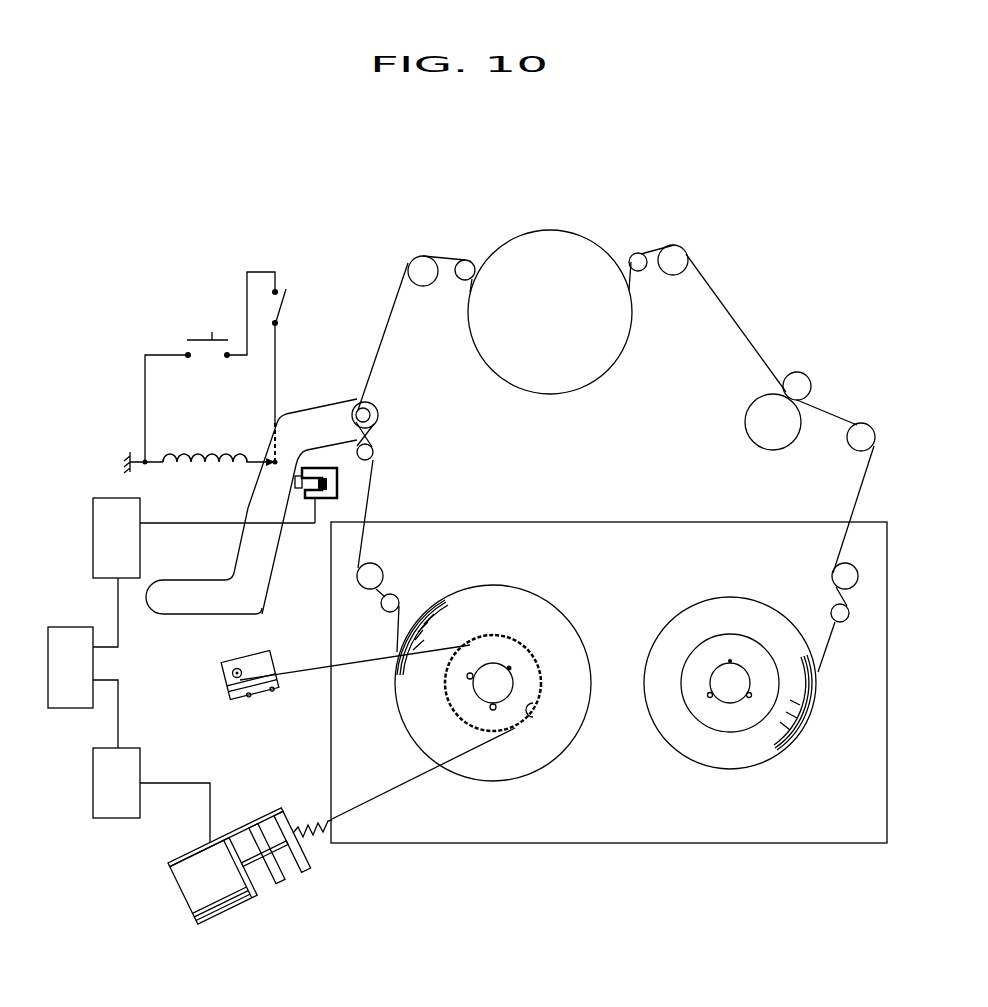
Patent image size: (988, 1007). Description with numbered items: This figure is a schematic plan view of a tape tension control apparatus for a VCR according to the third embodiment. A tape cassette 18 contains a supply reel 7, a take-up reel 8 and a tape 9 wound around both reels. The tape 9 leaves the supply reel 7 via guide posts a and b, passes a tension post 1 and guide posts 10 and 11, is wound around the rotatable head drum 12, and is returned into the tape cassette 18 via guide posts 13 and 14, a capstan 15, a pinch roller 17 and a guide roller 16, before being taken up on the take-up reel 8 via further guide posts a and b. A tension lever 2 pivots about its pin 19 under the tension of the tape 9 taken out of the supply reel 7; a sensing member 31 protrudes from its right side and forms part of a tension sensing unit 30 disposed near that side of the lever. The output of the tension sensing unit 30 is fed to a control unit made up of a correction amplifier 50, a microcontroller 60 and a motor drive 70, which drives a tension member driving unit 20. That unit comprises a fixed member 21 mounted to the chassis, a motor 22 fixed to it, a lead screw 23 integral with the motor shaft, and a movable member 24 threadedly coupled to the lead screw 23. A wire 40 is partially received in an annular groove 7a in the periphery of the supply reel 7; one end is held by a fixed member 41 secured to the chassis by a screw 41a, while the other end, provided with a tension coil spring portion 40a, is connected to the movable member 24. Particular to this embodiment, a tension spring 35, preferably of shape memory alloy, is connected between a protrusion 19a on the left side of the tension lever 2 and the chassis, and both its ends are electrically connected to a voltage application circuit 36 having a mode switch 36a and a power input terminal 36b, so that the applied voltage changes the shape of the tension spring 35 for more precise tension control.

The tension post 1 is at (380, 413).
The tension lever 2 is at (313, 416).
The supply reel 7 is at (493, 701).
The annular groove 7a is at (522, 712).
The take-up reel 8 is at (733, 696).
The tape 9 is at (382, 343).
The guide post 10 is at (424, 256).
The guide post 11 is at (466, 260).
The head drum 12 is at (593, 240).
The guide post 13 is at (634, 252).
The guide post 14 is at (682, 250).
The capstan 15 is at (796, 380).
The guide roller 16 is at (859, 430).
The pinch roller 17 is at (752, 422).
The tape cassette 18 is at (816, 845).
The pin 19 is at (247, 594).
The protrusion 19a is at (259, 478).
The tension member driving unit 20 is at (240, 905).
The fixed member 21 is at (239, 865).
The motor 22 is at (213, 881).
The lead screw 23 is at (264, 854).
The movable member 24 is at (267, 854).
The tension sensing unit 30 is at (345, 483).
The sensing member 31 is at (297, 490).
The tension spring 35 is at (200, 477).
The voltage application circuit 36 is at (145, 380).
The mode switch 36a is at (200, 316).
The power input terminal 36b is at (290, 298).
The wire 40 is at (375, 797).
The tension coil spring portion 40a is at (306, 820).
The fixed member 41 is at (317, 689).
The screw 41a is at (232, 672).
The correction amplifier 50 is at (93, 518).
The microcontroller 60 is at (68, 627).
The motor drive 70 is at (106, 824).
The guide post a is at (394, 600).
The guide post b is at (375, 572).